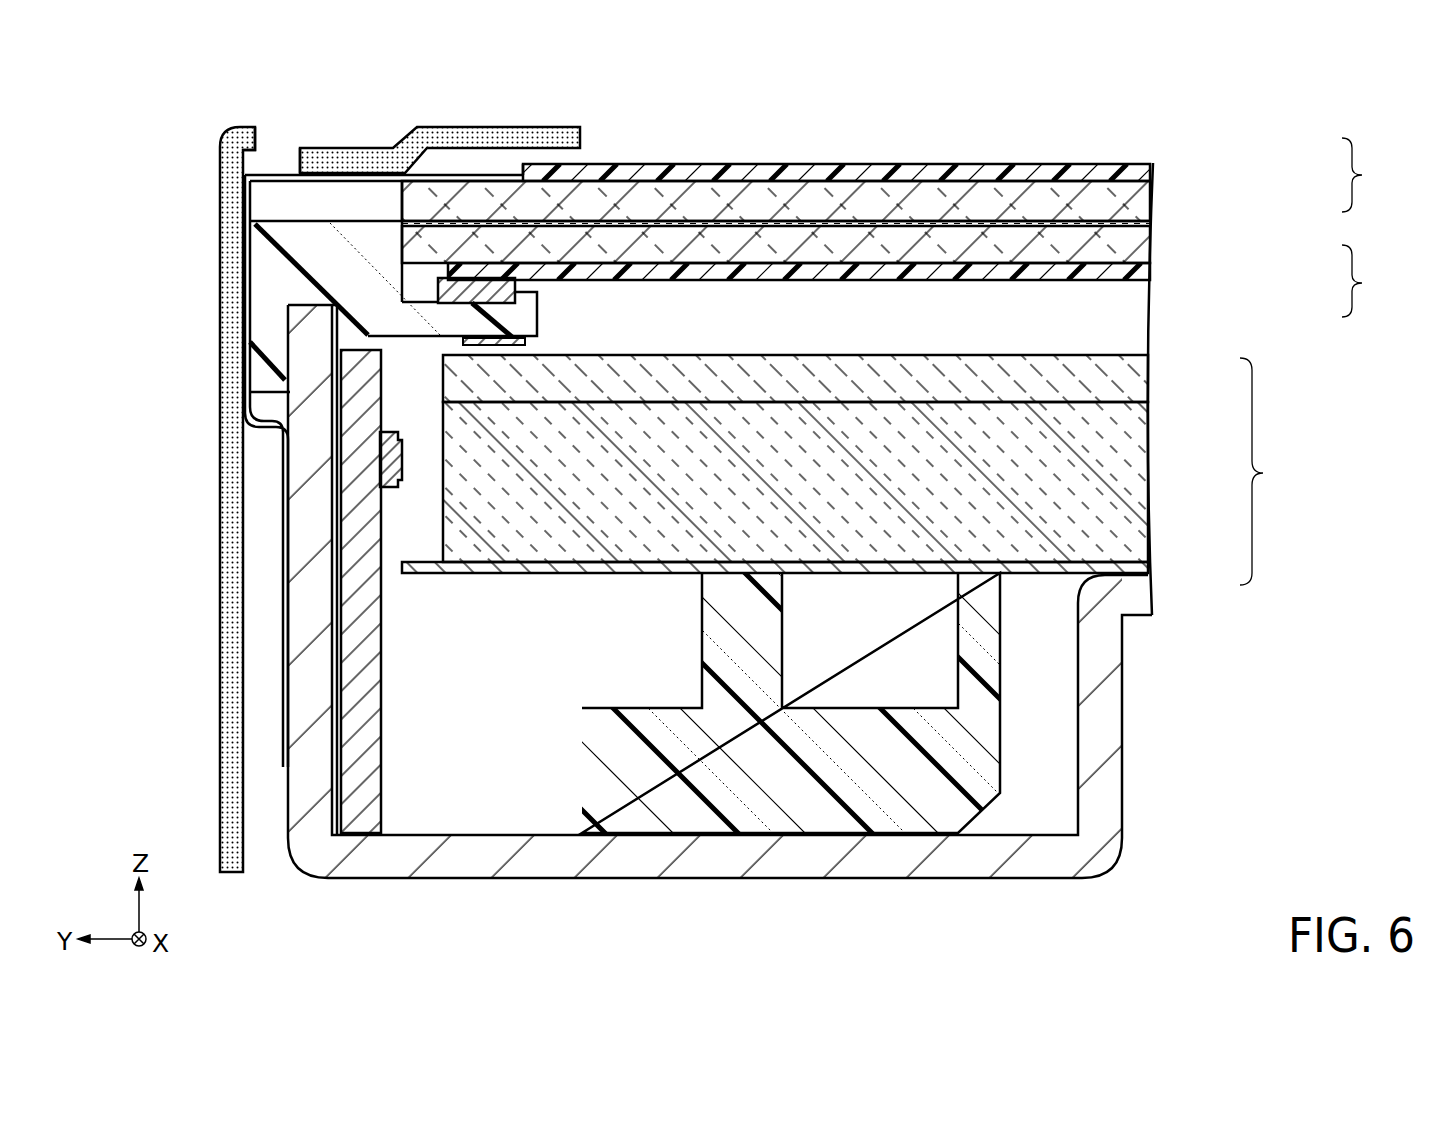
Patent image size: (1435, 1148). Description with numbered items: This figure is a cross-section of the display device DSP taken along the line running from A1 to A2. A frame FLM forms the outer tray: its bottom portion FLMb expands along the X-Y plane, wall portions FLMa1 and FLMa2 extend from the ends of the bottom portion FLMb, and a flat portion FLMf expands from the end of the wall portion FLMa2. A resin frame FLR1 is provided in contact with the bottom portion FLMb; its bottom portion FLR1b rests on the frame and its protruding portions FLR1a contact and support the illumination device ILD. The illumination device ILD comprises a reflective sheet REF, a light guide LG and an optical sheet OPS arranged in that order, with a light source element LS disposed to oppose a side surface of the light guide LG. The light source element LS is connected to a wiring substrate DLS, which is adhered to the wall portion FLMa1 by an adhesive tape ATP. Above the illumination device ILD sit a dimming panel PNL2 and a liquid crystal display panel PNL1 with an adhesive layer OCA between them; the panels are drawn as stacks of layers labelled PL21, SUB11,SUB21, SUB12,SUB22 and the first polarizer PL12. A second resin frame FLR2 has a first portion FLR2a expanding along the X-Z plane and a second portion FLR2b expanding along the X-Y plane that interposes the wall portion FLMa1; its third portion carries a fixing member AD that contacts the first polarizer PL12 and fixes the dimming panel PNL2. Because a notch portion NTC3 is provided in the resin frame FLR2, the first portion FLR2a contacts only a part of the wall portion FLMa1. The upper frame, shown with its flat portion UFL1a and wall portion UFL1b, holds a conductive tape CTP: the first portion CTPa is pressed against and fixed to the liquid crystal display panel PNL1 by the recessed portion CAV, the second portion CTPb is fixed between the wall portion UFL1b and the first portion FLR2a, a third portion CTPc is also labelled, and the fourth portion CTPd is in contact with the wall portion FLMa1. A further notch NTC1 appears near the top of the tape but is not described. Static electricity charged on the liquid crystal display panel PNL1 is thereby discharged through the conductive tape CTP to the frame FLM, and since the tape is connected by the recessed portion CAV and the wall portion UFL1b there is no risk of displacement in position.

The display device DSP is at (964, 93).
The conductive tape CTP is at (257, 172).
The first portion of the conductive tape CTPa is at (473, 174).
The second portion of the conductive tape CTPb is at (241, 284).
The cover tape third portion CTPc is at (267, 427).
The fourth portion of the conductive tape CTPd is at (285, 563).
The first notch NTC1 is at (274, 134).
The notch portion NTC3 is at (269, 846).
The recessed portion CAV is at (345, 131).
The resin frame FLR2 is at (258, 204).
The first portion of the resin frame FLR2a is at (256, 356).
The second portion of the resin frame FLR2b is at (348, 233).
The flat portion of the upper frame UFL1a is at (563, 137).
The wall portion of the upper frame UFL1b is at (238, 514).
The fixing member AD is at (502, 285).
The second polarizer of second panel PL21 is at (1153, 170).
The first substrates SUB11,SUB21 is at (1153, 190).
The adhesive layer OCA is at (1148, 224).
The second substrates SUB12,SUB22 is at (1150, 247).
The first polarizer PL12 is at (1150, 273).
The liquid crystal display panel PNL1 is at (1386, 175).
The dimming panel PNL2 is at (1386, 281).
The optical sheet OPS is at (1148, 378).
The light guide LG is at (1146, 478).
The reflective sheet REF is at (1146, 568).
The illumination device ILD is at (1273, 471).
The light source element LS is at (380, 466).
The wiring substrate DLS is at (345, 615).
The adhesive tape ATP is at (339, 688).
The frame FLM is at (998, 880).
The wall portion of the frame FLMa1 is at (305, 778).
The wall portion of the frame FLMa2 is at (1107, 778).
The bottom portion of the frame FLMb is at (522, 862).
The flat portion of the frame FLMf is at (1132, 600).
The resin frame FLR1 is at (580, 765).
The protruding portions of the resin frame FLR1a is at (713, 657).
The bottom portion of the resin frame FLR1b is at (791, 815).
The section line end point A1 is at (193, 889).
The section line end point A2 is at (1163, 891).